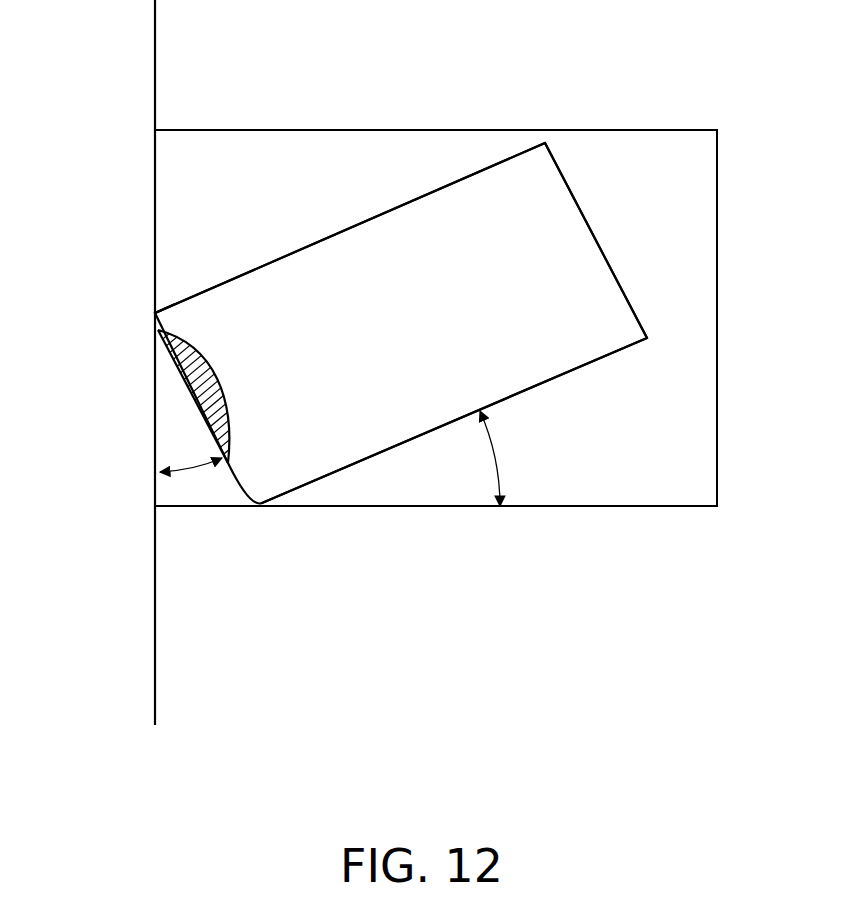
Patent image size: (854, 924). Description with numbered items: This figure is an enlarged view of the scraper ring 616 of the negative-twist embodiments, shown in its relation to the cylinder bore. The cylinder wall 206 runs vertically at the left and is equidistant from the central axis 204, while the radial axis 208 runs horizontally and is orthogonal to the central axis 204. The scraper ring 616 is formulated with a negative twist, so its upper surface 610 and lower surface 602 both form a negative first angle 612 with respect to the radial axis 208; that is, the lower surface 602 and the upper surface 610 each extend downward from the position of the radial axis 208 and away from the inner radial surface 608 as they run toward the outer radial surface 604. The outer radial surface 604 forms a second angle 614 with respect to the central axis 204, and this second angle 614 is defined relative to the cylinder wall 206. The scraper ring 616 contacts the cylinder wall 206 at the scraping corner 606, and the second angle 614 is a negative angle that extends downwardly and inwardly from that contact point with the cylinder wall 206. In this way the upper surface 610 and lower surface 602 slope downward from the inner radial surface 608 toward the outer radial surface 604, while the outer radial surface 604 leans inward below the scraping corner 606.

The central axis 204 is at (717, 360).
The cylinder wall 206 is at (155, 160).
The radial axis 208 is at (450, 506).
The lower surface 602 is at (382, 453).
The outer radial surface 604 is at (198, 410).
The scraping corner 606 is at (156, 313).
The inner radial surface 608 is at (613, 273).
The upper surface 610 is at (355, 224).
The first angle 612 is at (498, 453).
The second angle 614 is at (192, 470).
The scraper ring 616 is at (460, 308).